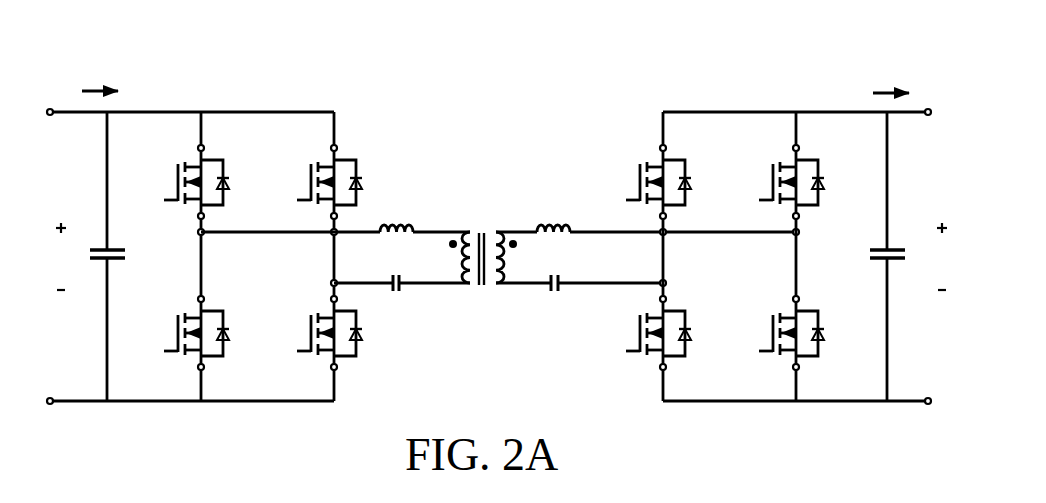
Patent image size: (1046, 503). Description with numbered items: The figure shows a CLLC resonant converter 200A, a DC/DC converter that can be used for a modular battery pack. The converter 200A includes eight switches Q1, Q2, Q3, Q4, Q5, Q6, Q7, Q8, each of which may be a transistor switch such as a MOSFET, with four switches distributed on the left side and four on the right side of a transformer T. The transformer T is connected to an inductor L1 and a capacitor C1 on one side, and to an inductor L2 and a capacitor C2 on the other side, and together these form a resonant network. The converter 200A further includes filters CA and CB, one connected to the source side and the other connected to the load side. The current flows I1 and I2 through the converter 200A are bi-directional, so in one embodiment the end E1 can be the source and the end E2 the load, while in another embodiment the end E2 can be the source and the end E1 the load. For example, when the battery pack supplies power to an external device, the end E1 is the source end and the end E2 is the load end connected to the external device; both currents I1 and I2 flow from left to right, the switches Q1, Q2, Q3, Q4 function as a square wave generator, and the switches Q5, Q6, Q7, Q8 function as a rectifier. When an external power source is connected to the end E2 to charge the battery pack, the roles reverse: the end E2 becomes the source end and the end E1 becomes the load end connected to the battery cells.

The CLLC resonant converter 200A is at (164, 39).
The switch Q1 is at (315, 333).
The switch Q2 is at (181, 333).
The switch Q3 is at (184, 182).
The switch Q4 is at (317, 182).
The switch Q5 is at (775, 333).
The switch Q6 is at (643, 333).
The switch Q7 is at (643, 182).
The switch Q8 is at (775, 182).
The inductor L1 is at (398, 206).
The inductor L2 is at (553, 206).
The capacitor C1 is at (404, 305).
The capacitor C2 is at (559, 305).
The filter CA is at (134, 257).
The filter CB is at (867, 252).
The transformer T is at (483, 231).
The source or load end E1 is at (60, 256).
The load or source end E2 is at (945, 256).
The current flow I1 is at (81, 91).
The current flow I2 is at (917, 91).